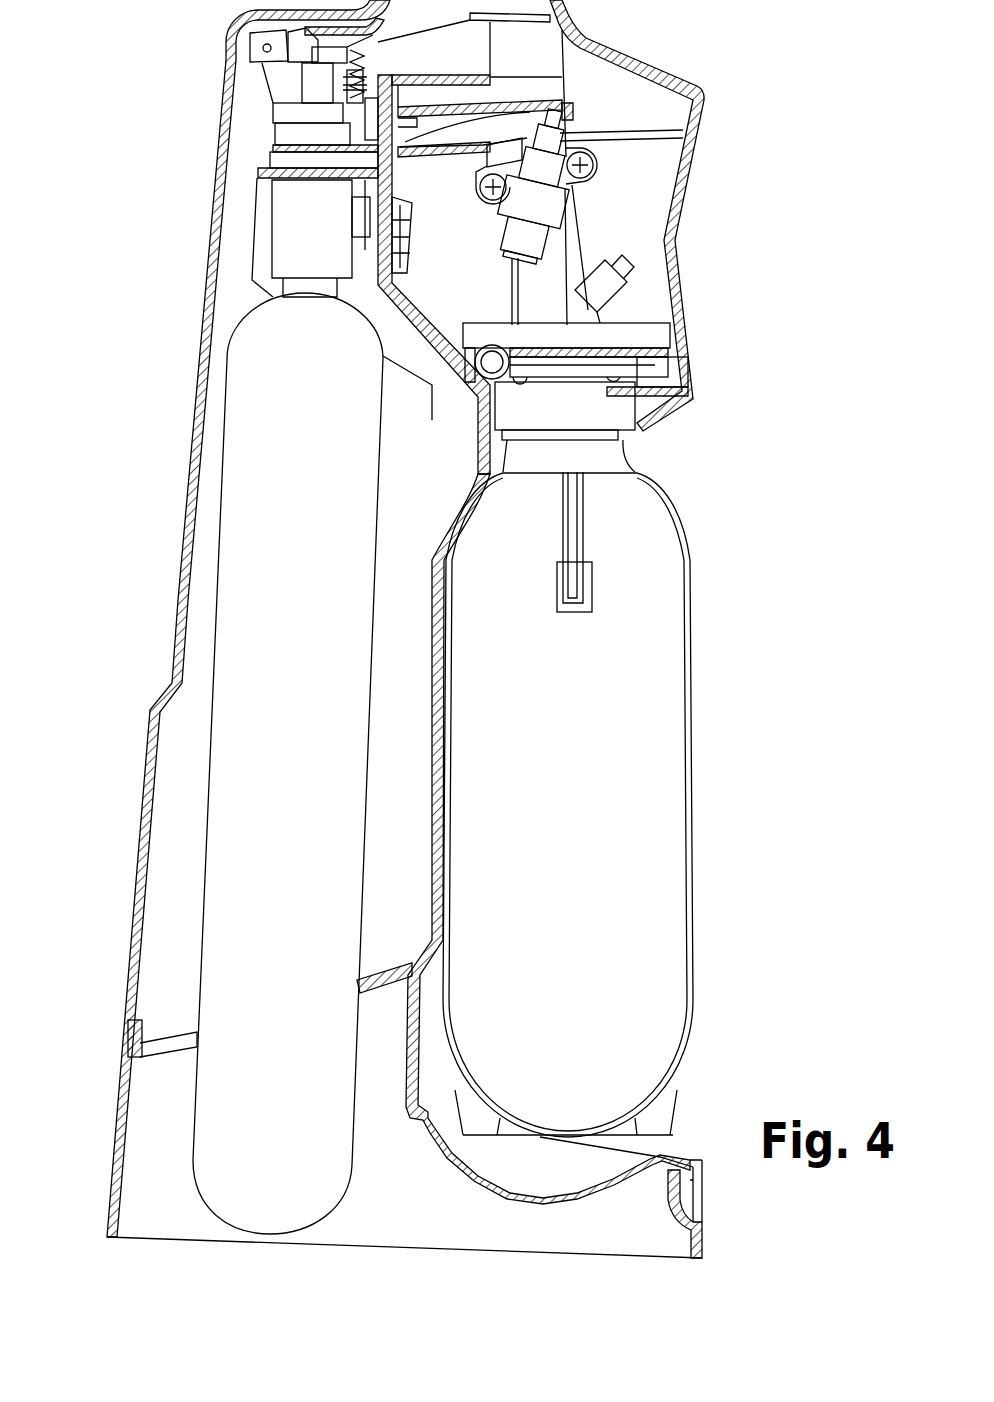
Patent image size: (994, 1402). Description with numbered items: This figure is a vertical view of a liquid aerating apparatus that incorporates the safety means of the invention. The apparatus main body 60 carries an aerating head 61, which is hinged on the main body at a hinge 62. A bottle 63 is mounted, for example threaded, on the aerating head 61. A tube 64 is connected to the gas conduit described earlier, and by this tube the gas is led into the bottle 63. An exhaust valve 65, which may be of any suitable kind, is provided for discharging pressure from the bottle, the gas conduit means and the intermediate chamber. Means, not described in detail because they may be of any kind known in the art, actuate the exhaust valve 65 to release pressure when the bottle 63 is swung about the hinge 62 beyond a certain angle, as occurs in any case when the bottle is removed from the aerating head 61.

The apparatus main body 60 is at (106, 1157).
The aerating head 61 is at (637, 345).
The hinge 62 is at (493, 362).
The bottle 63 is at (690, 815).
The tube 64 is at (585, 532).
The exhaust valve 65 is at (532, 202).